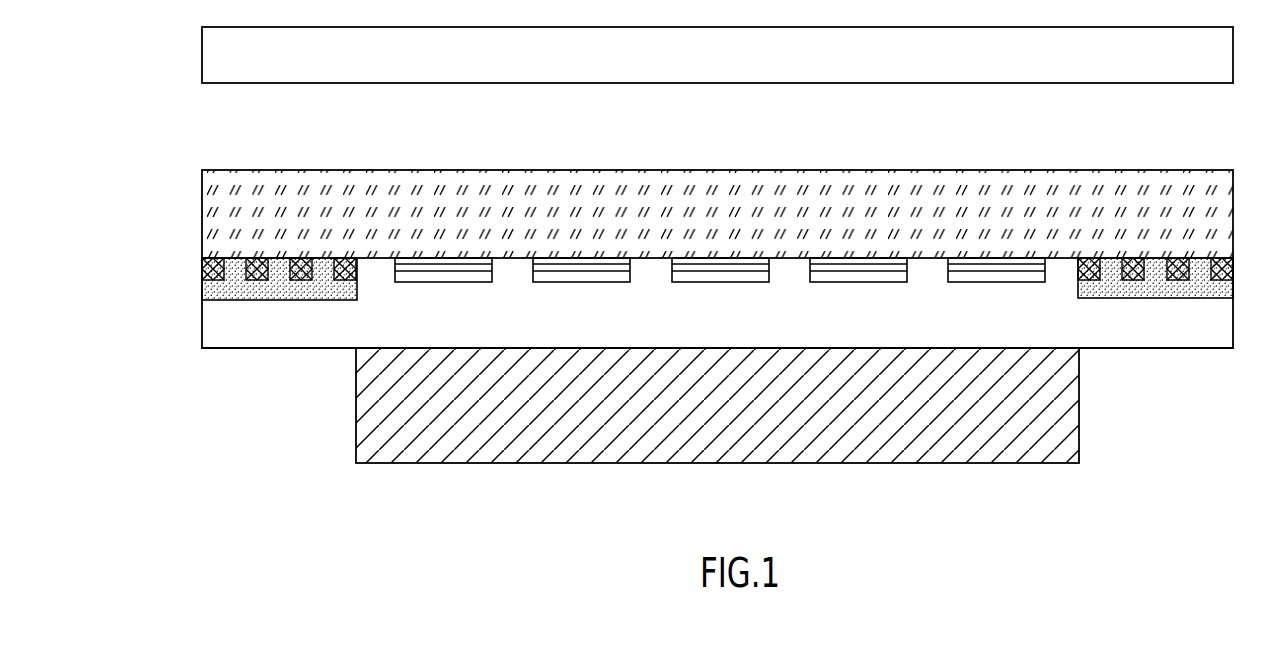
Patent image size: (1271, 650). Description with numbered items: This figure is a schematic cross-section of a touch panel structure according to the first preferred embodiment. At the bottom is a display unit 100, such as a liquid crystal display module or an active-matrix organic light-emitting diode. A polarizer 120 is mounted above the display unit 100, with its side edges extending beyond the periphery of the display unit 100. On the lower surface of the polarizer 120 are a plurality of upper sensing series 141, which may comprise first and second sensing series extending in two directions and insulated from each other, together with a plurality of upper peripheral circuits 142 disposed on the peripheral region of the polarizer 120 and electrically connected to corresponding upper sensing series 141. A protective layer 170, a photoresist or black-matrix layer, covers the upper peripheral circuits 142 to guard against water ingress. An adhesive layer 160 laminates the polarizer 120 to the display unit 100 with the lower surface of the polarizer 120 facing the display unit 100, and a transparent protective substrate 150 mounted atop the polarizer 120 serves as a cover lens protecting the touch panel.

The display unit 100 is at (625, 413).
The polarizer 120 is at (600, 217).
The upper sensing series 141 is at (432, 267).
The upper peripheral circuits 142 is at (295, 278).
The transparent protective substrate 150 is at (822, 58).
The adhesive layer 160 is at (775, 325).
The protective layer 170 is at (1118, 298).